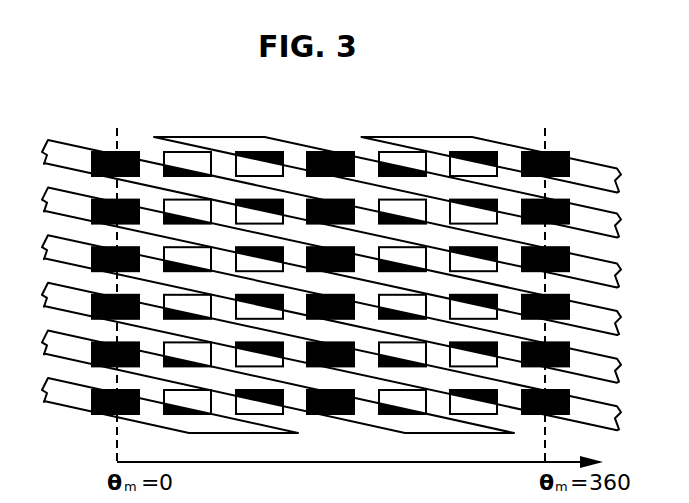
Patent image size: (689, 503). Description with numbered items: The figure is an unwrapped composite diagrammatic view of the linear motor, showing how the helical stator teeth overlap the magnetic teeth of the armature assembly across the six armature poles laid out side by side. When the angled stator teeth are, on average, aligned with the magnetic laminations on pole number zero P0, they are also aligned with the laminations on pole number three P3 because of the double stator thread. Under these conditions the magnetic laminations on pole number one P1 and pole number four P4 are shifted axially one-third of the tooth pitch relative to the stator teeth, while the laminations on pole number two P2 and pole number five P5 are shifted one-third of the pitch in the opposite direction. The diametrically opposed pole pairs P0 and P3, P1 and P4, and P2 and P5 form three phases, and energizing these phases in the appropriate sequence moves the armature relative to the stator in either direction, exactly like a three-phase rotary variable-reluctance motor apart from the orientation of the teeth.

The pole number zero P0 is at (330, 251).
The pole number one P1 is at (187, 251).
The pole number two P2 is at (259, 251).
The pole number three P3 is at (330, 251).
The pole number four P4 is at (402, 251).
The pole number five P5 is at (473, 251).